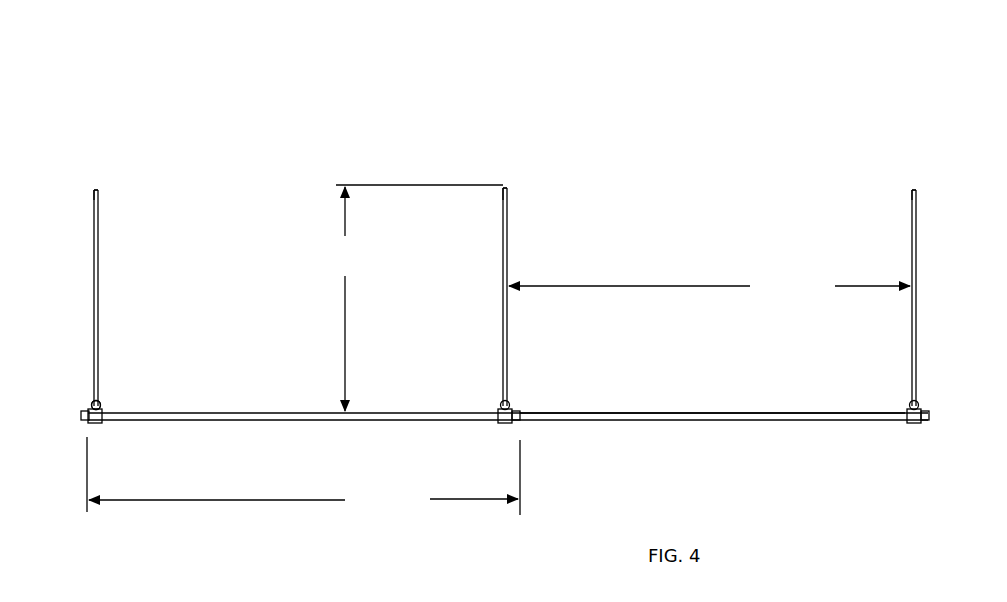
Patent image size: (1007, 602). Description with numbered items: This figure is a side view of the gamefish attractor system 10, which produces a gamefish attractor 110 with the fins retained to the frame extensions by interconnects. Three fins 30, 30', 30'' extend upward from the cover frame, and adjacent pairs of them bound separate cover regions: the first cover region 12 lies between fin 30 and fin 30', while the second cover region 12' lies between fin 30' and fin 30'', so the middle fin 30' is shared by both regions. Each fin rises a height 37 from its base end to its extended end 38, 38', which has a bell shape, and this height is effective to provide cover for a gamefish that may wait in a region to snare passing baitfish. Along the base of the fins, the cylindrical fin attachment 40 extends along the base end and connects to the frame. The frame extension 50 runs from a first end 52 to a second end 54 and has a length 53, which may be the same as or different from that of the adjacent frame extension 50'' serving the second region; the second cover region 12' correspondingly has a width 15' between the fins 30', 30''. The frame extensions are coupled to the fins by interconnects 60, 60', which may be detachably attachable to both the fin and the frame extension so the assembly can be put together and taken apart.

The gamefish attractor system 10 is at (407, 107).
The cover region 12 is at (300, 193).
The second cover region 12' is at (710, 187).
The width 15' is at (709, 283).
The fin 30 is at (125, 275).
The second fin 30' is at (545, 276).
The third fin 30'' is at (871, 293).
The height 37 is at (419, 298).
The extended end 38 is at (99, 141).
The extended end 38' is at (512, 144).
The fin attachment 40 is at (100, 408).
The frame extension 50 is at (508, 371).
The frame extension 50'' is at (712, 368).
The first end 52 is at (85, 414).
The length 53 is at (303, 476).
The second end 54 is at (518, 411).
The interconnect 60 is at (81, 356).
The interconnect 60' is at (489, 364).
The gamefish attractor 110 is at (915, 190).